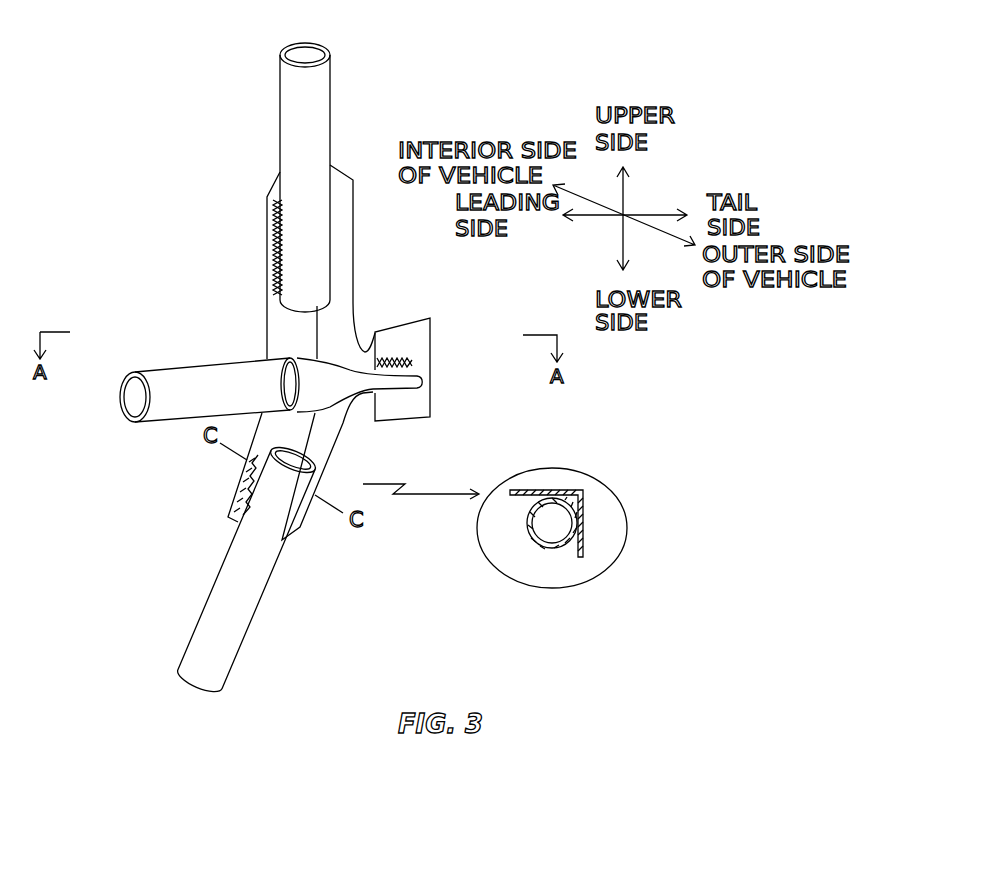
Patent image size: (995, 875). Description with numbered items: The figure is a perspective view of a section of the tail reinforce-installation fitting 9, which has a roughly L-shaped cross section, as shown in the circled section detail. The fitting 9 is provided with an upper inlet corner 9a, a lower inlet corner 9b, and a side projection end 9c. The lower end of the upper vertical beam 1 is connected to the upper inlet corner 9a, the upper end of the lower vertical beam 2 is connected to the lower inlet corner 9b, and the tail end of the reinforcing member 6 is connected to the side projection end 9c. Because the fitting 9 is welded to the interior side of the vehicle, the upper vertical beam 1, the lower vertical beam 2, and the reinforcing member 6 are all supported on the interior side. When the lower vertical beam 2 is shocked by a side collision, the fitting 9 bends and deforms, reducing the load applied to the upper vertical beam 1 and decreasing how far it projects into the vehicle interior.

The upper vertical beam 1 is at (330, 85).
The lower vertical beam 2 is at (200, 610).
The reinforcing member 6 is at (199, 364).
The tail reinforce-installation fitting 9 is at (362, 250).
The upper inlet corner 9a is at (268, 243).
The lower inlet corner 9b is at (247, 468).
The side projection end 9c is at (432, 371).